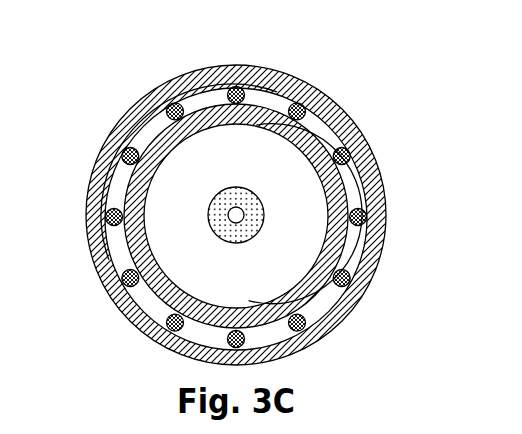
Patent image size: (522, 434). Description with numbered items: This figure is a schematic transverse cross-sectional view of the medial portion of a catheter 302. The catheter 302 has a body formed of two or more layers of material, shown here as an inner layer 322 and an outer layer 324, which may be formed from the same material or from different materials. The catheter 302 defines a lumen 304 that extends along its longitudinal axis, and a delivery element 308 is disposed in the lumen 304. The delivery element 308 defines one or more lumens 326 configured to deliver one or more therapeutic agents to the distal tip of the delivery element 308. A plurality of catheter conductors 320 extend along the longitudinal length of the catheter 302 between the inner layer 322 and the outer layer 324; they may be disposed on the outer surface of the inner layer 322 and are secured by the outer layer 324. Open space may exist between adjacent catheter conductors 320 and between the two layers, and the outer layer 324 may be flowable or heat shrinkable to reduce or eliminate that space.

The catheter 302 is at (398, 305).
The lumen 304 is at (158, 198).
The delivery element 308 is at (245, 193).
The catheter conductors 320 is at (124, 150).
The inner layer 322 is at (213, 112).
The outer layer 324 is at (268, 75).
The lumen 326 is at (244, 214).